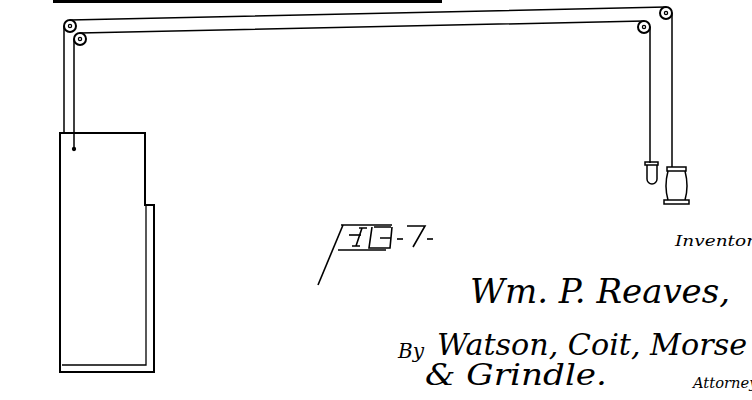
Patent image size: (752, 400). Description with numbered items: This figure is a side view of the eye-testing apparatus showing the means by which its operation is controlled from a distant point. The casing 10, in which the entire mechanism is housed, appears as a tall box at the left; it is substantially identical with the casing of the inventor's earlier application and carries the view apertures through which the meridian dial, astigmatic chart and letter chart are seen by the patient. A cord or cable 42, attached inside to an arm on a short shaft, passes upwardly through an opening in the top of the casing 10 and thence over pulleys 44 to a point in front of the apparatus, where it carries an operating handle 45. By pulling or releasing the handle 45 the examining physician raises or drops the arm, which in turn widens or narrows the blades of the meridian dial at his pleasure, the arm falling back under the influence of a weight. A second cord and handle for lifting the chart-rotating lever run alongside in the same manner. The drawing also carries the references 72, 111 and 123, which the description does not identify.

The casing 10 is at (135, 175).
The cord or cable 42 is at (290, 16).
The pulleys 44 is at (63, 28).
The operating handle 45 is at (688, 178).
The lower cord 72 is at (164, 32).
The support member 111 is at (727, 0).
The hook weight 123 is at (646, 170).